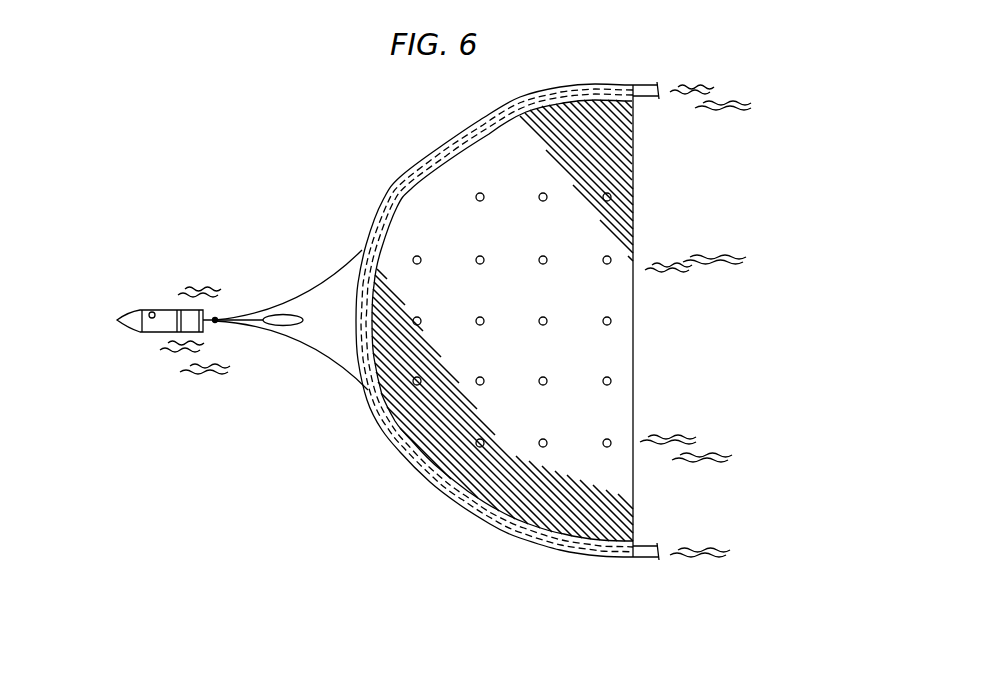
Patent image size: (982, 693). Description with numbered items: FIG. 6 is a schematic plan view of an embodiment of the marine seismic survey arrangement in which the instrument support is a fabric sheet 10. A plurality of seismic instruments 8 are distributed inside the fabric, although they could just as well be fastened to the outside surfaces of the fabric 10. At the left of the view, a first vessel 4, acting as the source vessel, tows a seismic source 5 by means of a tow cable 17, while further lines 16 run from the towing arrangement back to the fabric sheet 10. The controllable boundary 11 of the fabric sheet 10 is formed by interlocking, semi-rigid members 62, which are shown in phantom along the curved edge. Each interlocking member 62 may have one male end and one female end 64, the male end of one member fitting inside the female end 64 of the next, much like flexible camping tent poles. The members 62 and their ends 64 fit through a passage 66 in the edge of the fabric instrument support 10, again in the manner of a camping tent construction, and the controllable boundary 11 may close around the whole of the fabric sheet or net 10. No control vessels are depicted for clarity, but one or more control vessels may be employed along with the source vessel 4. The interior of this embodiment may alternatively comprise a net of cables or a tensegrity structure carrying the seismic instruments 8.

The first vessel 4 is at (155, 310).
The tow cable 17 is at (247, 317).
The seismic source 5 is at (282, 313).
The tow lines 16 is at (320, 285).
The female end 64 is at (481, 320).
The passage 66 is at (460, 505).
The interlocking semi-rigid members 62 is at (400, 447).
The fabric sheet instrument support 10 is at (633, 207).
The controllable boundary 11 is at (395, 430).
The seismic instruments 8 is at (611, 379).